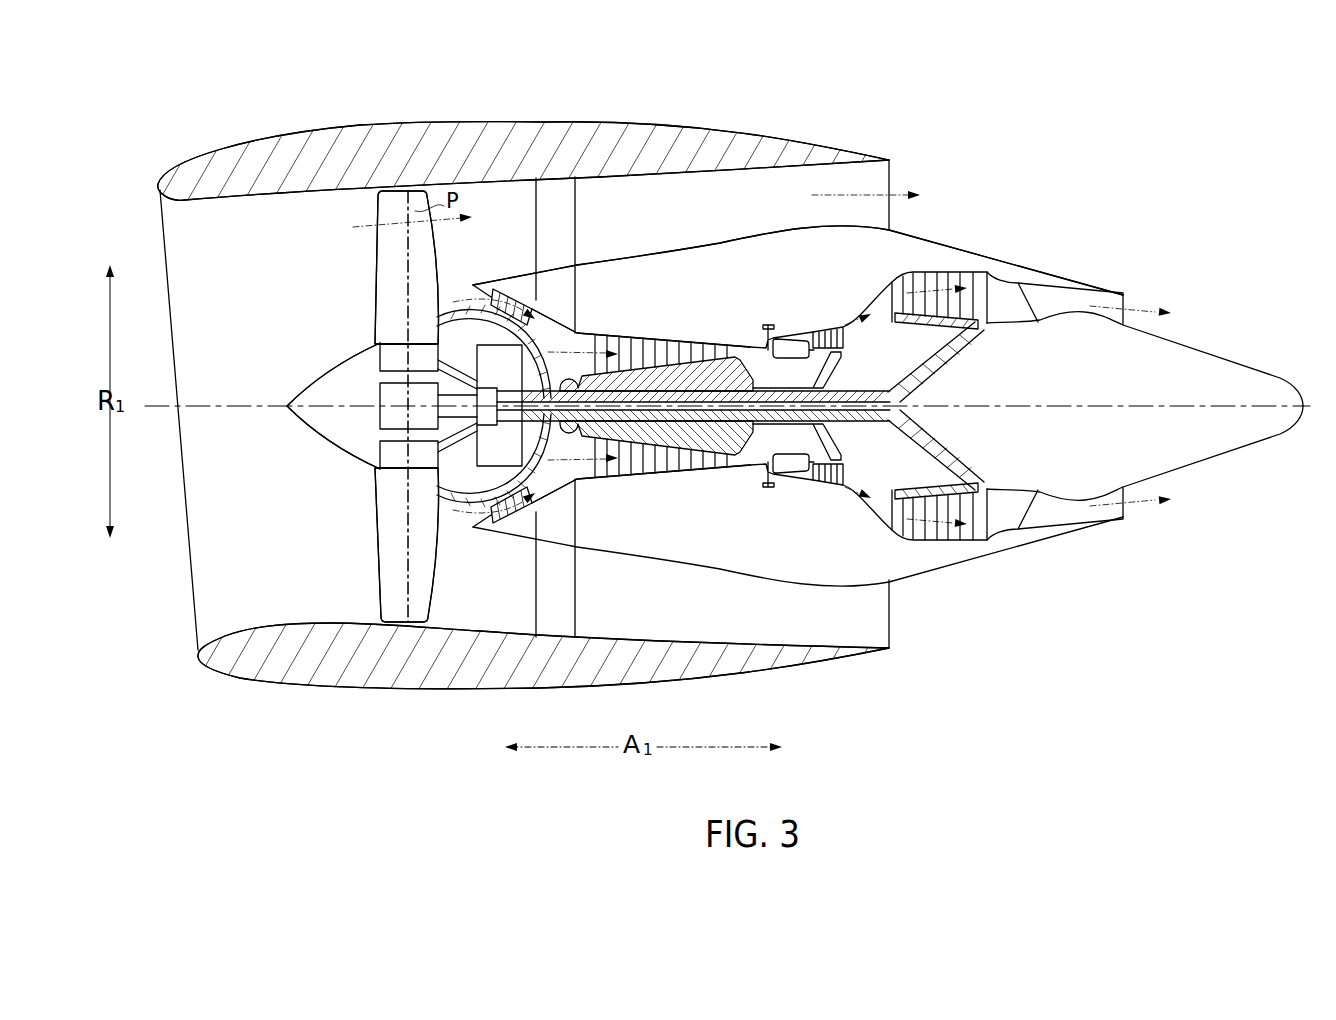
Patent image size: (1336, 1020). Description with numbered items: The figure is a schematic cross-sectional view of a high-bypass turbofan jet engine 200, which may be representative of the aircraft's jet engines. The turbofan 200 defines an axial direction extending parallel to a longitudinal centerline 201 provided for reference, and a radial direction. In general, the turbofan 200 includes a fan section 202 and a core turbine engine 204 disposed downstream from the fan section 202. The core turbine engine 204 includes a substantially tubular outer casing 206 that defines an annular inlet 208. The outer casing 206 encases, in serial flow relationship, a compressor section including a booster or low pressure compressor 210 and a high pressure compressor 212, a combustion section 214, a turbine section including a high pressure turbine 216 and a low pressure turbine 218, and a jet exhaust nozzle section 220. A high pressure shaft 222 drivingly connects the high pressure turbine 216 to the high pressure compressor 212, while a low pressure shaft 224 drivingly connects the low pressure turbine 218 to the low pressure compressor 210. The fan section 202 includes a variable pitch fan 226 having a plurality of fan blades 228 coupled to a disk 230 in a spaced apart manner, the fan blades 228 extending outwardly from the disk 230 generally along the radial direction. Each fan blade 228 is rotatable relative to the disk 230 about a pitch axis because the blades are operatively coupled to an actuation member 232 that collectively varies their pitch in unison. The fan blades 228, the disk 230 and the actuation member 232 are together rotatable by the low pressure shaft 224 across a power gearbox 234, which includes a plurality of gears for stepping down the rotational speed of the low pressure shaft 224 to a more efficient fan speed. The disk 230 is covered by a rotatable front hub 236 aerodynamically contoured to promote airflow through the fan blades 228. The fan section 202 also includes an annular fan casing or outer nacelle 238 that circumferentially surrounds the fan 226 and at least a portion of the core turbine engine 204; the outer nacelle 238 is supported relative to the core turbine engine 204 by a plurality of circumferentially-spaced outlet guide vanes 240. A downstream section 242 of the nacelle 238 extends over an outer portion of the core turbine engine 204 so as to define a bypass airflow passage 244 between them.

The high-bypass turbofan jet engine 200 is at (996, 162).
The longitudinal centerline 201 is at (1053, 402).
The fan section 202 is at (294, 222).
The core turbine engine 204 is at (706, 278).
The outer casing 206 is at (740, 576).
The annular inlet 208 is at (472, 517).
The low pressure compressor 210 is at (530, 532).
The high pressure compressor 212 is at (607, 478).
The combustion section 214 is at (784, 480).
The high pressure turbine 216 is at (860, 478).
The low pressure turbine 218 is at (977, 548).
The jet exhaust nozzle section 220 is at (1034, 530).
The high pressure shaft 222 is at (800, 371).
The low pressure shaft 224 is at (892, 390).
The variable pitch fan 226 is at (328, 458).
The fan blades 228 is at (377, 556).
The disk 230 is at (386, 354).
The actuation member 232 is at (379, 384).
The power gearbox 234 is at (541, 331).
The front hub 236 is at (295, 421).
The outer nacelle 238 is at (420, 690).
The outlet guide vanes 240 is at (580, 210).
The downstream section of the nacelle 242 is at (792, 138).
The bypass airflow passage 244 is at (788, 206).